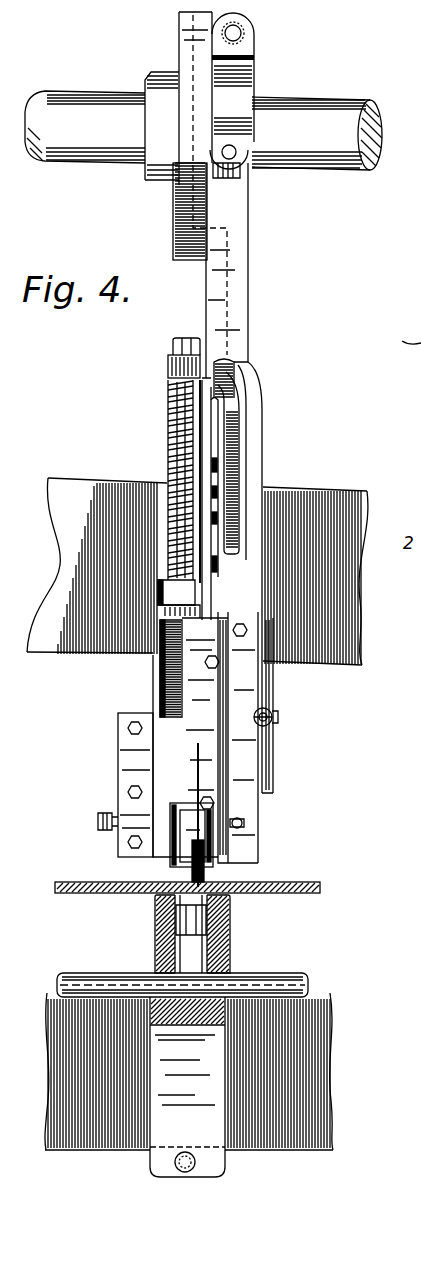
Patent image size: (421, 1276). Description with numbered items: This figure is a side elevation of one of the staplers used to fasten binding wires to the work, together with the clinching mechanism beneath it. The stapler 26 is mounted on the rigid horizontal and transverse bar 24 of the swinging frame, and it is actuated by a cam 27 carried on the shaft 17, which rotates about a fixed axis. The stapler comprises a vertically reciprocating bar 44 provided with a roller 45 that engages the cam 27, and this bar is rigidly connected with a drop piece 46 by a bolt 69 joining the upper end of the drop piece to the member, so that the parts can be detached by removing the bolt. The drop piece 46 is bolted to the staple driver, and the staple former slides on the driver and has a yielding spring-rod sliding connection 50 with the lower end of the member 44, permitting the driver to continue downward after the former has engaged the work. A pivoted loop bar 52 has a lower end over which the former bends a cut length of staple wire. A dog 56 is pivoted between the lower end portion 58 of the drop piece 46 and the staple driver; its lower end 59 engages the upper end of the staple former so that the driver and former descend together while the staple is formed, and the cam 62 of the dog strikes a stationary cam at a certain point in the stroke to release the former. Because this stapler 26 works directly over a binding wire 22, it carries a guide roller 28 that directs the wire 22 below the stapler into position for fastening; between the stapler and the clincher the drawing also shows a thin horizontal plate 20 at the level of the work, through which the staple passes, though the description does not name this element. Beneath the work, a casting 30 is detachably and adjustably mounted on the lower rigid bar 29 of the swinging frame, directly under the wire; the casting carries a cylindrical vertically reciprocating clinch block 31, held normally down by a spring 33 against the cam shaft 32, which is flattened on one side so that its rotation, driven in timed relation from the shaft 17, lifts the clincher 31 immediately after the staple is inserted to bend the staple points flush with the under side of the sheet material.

The shaft 17 is at (334, 170).
The throat plate 20 is at (312, 881).
The binding wires 22 is at (199, 763).
The rigid horizontal and transverse bar 24 is at (338, 475).
The stapler 26 is at (258, 431).
The cam 27 is at (216, 229).
The guide roller 28 is at (190, 829).
The lower rigid bar 29 is at (326, 1093).
The casting 30 is at (187, 1087).
The clinch block 31 is at (204, 955).
The cam shaft 32 is at (290, 982).
The spring 33 is at (232, 922).
The vertically reciprocating bar 44 is at (205, 299).
The roller 45 is at (171, 246).
The drop piece 46 is at (250, 386).
The spring-rod sliding connection 50 is at (168, 440).
The loop bar 52 is at (168, 417).
The dog 56 is at (203, 493).
The lower end portion of the drop piece 58 is at (203, 466).
The lower end of the dog 59 is at (205, 564).
The cam of the dog 62 is at (203, 517).
The bolt 69 is at (173, 344).